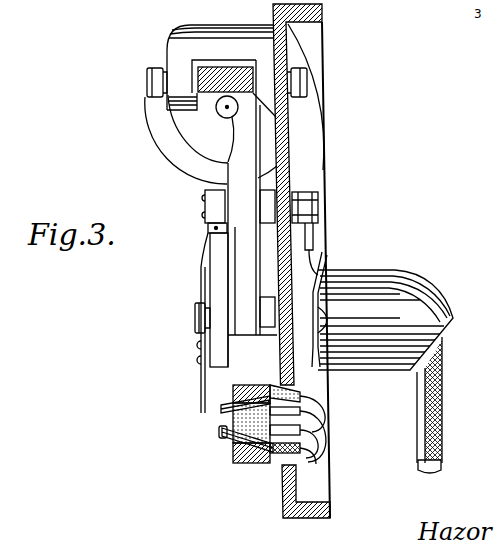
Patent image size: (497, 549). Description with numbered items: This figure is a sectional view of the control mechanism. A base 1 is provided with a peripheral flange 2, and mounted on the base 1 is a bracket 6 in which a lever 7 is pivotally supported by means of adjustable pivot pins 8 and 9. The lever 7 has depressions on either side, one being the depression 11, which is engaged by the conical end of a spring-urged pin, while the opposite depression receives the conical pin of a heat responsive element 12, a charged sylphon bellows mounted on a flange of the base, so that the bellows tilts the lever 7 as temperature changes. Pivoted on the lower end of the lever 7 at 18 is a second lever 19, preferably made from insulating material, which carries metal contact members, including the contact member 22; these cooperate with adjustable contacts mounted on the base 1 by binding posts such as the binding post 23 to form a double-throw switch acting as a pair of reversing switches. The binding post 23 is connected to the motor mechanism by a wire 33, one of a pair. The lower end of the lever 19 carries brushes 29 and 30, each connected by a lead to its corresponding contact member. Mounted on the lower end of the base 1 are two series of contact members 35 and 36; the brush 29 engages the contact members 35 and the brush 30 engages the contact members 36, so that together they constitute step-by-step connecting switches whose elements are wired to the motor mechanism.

The base 1 is at (288, 512).
The peripheral flange 2 is at (312, 17).
The bracket 6 is at (229, 44).
The lever 7 is at (236, 166).
The adjustable pivot pin 8 is at (147, 85).
The adjustable pivot pin 9 is at (308, 83).
The depression 11 is at (218, 115).
The heat responsive element 12 is at (149, 127).
The pivot 18 is at (195, 318).
The second lever 19 is at (214, 272).
The metal contact member 22 is at (205, 207).
The binding post 23 is at (319, 199).
The brush 29 is at (218, 410).
The brush 30 is at (221, 431).
The wire 33 is at (317, 262).
The contact members 35 is at (239, 400).
The contact members 36 is at (223, 440).